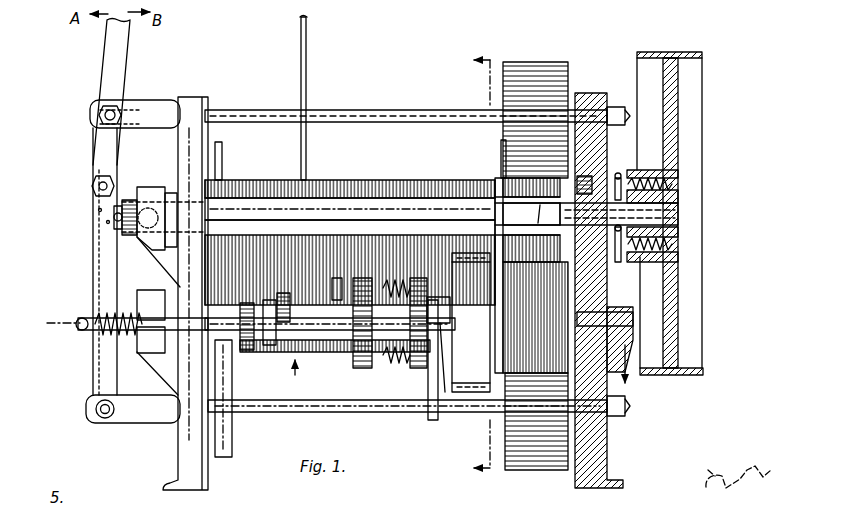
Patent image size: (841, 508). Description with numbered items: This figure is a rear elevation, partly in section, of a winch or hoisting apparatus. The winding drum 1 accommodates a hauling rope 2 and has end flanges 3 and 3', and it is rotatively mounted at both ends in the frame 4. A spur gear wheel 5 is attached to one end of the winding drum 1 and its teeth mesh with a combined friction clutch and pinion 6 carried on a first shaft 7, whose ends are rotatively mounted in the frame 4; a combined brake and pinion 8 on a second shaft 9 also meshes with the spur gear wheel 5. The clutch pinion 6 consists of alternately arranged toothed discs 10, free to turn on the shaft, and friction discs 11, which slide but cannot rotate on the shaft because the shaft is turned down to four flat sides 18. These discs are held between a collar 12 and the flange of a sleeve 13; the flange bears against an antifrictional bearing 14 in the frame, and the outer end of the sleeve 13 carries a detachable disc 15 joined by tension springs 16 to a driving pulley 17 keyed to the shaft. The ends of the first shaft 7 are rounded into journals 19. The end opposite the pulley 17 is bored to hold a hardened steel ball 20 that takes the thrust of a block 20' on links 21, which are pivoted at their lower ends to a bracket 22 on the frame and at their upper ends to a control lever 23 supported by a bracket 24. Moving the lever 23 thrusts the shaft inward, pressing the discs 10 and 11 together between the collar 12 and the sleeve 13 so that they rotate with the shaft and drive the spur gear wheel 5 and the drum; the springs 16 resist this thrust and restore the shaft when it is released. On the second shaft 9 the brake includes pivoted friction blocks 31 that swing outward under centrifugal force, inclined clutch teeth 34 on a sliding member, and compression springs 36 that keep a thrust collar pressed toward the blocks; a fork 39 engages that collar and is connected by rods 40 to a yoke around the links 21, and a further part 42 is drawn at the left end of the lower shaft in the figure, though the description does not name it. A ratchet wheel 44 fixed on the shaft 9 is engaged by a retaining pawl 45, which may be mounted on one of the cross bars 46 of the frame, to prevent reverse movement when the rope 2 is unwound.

The winding drum 1 is at (338, 180).
The hauling rope 2 is at (304, 24).
The end flange 3 is at (484, 155).
The end flange 3' is at (229, 161).
The frame 4 is at (190, 103).
The spur gear wheel 5 is at (551, 52).
The combined friction clutch and pinion 6 is at (474, 164).
The first shaft 7 is at (350, 209).
The combined brake and pinion 8 is at (490, 338).
The second shaft 9 is at (305, 340).
The toothed discs 10 is at (531, 213).
The friction discs 11 is at (536, 214).
The collar 12 is at (475, 170).
The sleeve 13 is at (613, 182).
The antifrictional bearing 14 is at (612, 165).
The detachable disc 15 is at (618, 240).
The tension springs 16 is at (676, 184).
The driving pulley 17 is at (676, 104).
The flat sides 18 is at (495, 222).
The journals 19 is at (133, 200).
The hardened steel ball 20 is at (96, 233).
The block 20' is at (83, 217).
The links 21 is at (96, 288).
The bracket 22 is at (133, 409).
The control lever 23 is at (103, 66).
The bracket 24 is at (143, 108).
The friction blocks 31 is at (471, 322).
The inclined clutch teeth 34 is at (441, 396).
The compression springs 36 is at (388, 364).
The fork 39 is at (434, 424).
The rods 40 is at (290, 330).
The spring 42 is at (107, 335).
The ratchet wheel 44 is at (205, 283).
The retaining pawl 45 is at (232, 443).
The cross bars 46 is at (400, 114).